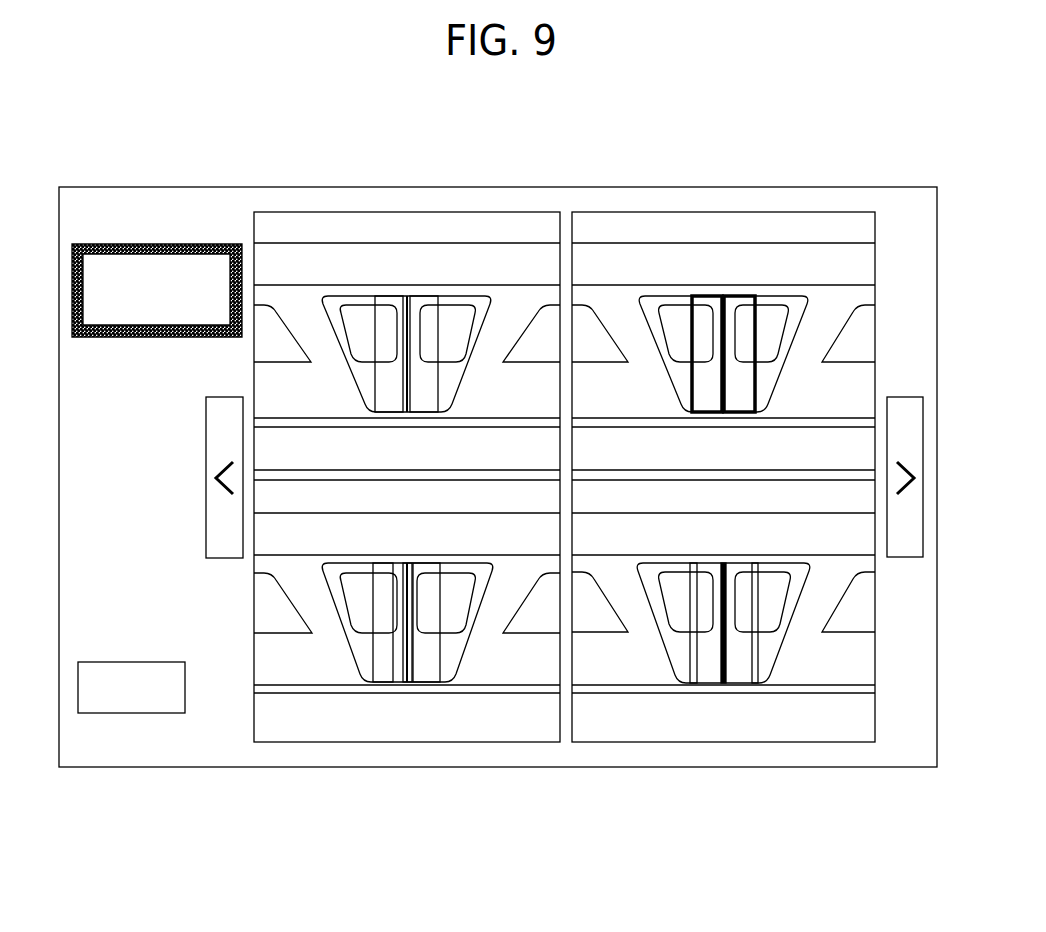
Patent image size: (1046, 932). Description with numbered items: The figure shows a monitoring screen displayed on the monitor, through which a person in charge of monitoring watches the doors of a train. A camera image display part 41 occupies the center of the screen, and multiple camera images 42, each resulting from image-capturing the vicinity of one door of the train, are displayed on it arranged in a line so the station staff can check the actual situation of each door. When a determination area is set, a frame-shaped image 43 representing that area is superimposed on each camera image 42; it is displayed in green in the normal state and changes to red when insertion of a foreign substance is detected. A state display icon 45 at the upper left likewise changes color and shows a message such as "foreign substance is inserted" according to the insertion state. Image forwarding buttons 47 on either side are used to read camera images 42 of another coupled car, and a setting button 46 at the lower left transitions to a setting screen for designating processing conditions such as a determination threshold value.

The camera image display part 41 is at (722, 212).
The camera image 42 is at (277, 262).
The frame-shaped image 43 is at (440, 330).
The state display icon 45 is at (167, 243).
The setting button 46 is at (120, 714).
The image forwarding button 47 is at (227, 558).